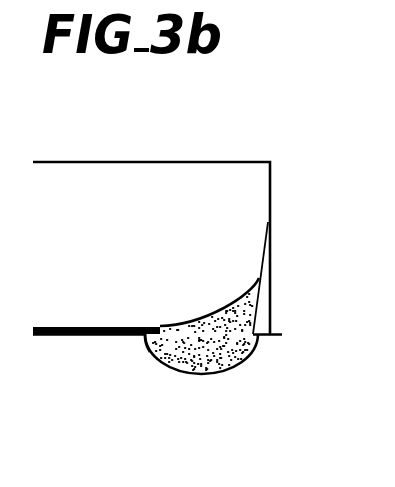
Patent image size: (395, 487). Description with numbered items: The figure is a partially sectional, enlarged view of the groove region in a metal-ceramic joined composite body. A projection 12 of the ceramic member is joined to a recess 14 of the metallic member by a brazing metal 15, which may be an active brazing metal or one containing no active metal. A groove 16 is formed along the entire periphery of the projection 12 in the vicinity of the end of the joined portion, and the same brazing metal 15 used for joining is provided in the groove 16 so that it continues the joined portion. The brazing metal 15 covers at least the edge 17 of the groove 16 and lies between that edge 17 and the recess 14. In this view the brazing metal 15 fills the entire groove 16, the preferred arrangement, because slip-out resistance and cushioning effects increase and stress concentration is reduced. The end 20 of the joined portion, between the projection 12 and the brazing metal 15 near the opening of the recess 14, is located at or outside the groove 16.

The projection 12 is at (224, 428).
The recess 14 is at (233, 213).
The brazing metal 15 is at (72, 327).
The groove 16 is at (247, 355).
The edge 17 is at (145, 338).
The end of the joined portion 20 is at (257, 332).